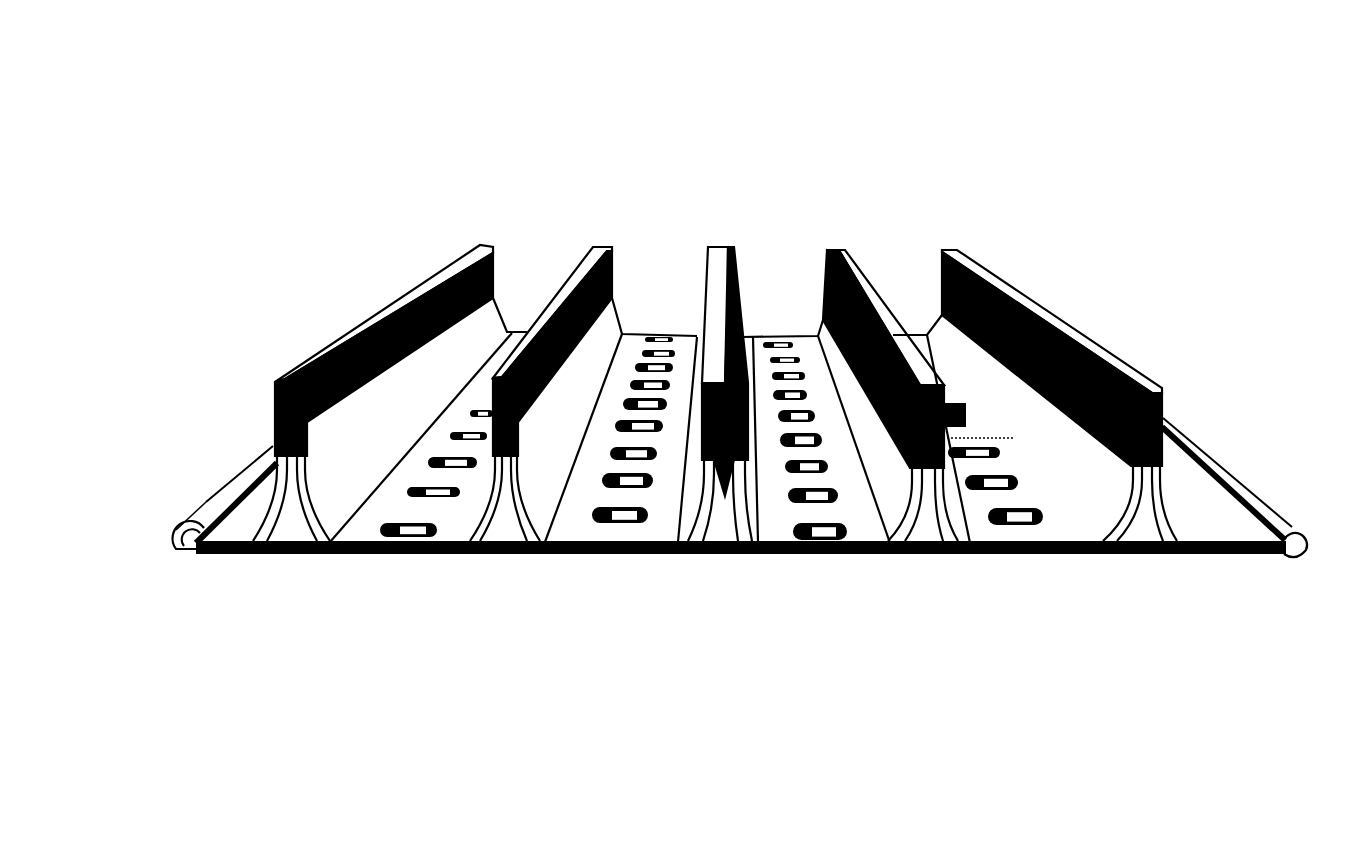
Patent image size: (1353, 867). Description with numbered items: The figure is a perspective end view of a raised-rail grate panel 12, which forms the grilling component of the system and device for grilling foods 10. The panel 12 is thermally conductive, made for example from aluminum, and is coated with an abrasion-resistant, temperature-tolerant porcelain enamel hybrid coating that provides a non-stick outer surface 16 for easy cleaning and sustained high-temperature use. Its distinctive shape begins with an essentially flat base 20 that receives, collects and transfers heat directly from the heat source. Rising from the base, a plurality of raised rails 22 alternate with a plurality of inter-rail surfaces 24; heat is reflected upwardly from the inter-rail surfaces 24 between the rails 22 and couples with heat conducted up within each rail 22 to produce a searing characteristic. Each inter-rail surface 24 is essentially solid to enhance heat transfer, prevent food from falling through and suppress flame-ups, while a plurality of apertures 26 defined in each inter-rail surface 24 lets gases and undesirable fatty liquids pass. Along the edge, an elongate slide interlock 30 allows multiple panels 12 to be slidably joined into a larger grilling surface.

The system and device for grilling foods 10 is at (362, 159).
The raised-rail grate panel 12 is at (348, 558).
The non-stick outer surface 16 is at (668, 331).
The flat base 20 is at (651, 558).
The raised rail 22 is at (846, 258).
The inter-rail surface 24 is at (400, 508).
The aperture 26 is at (850, 558).
The elongate slide interlock 30 is at (1215, 457).